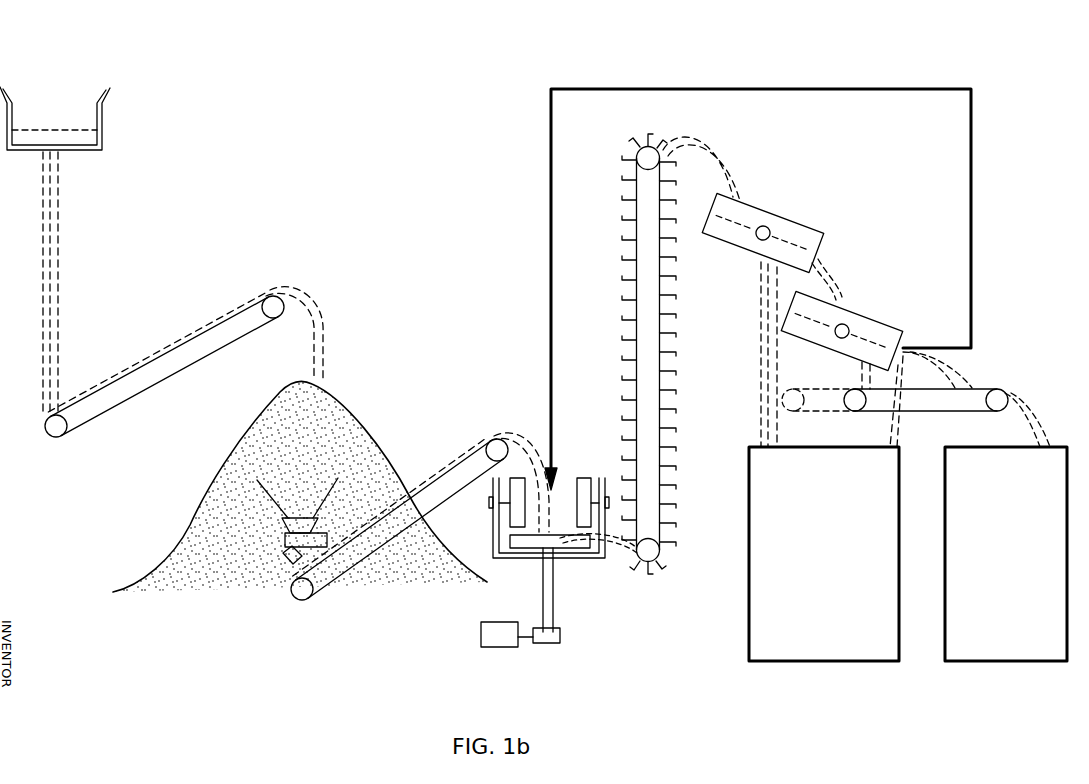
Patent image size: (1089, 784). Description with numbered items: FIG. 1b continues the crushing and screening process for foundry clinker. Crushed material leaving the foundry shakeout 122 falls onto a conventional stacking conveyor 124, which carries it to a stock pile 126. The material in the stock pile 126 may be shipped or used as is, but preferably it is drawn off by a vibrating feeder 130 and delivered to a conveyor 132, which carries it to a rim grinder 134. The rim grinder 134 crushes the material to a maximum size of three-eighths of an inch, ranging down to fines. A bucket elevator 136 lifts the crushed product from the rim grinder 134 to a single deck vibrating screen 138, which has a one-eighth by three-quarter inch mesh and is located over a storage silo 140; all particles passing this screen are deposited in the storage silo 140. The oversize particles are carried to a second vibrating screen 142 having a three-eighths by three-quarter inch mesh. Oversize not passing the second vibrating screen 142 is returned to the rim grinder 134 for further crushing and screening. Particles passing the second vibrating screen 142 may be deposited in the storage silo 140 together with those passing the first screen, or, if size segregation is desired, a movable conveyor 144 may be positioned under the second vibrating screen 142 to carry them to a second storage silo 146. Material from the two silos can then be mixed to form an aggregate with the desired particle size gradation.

The foundry shakeout 122 is at (103, 128).
The stacking conveyor 124 is at (168, 365).
The stock pile 126 is at (355, 403).
The vibrating feeder 130 is at (283, 548).
The conveyor 132 is at (452, 497).
The rim grinder 134 is at (567, 560).
The bucket elevator 136 is at (632, 273).
The single deck vibrating screen 138 is at (781, 216).
The storage silo 140 is at (752, 590).
The second vibrating screen 142 is at (870, 308).
The movable conveyor 144 is at (972, 389).
The second storage silo 146 is at (968, 655).